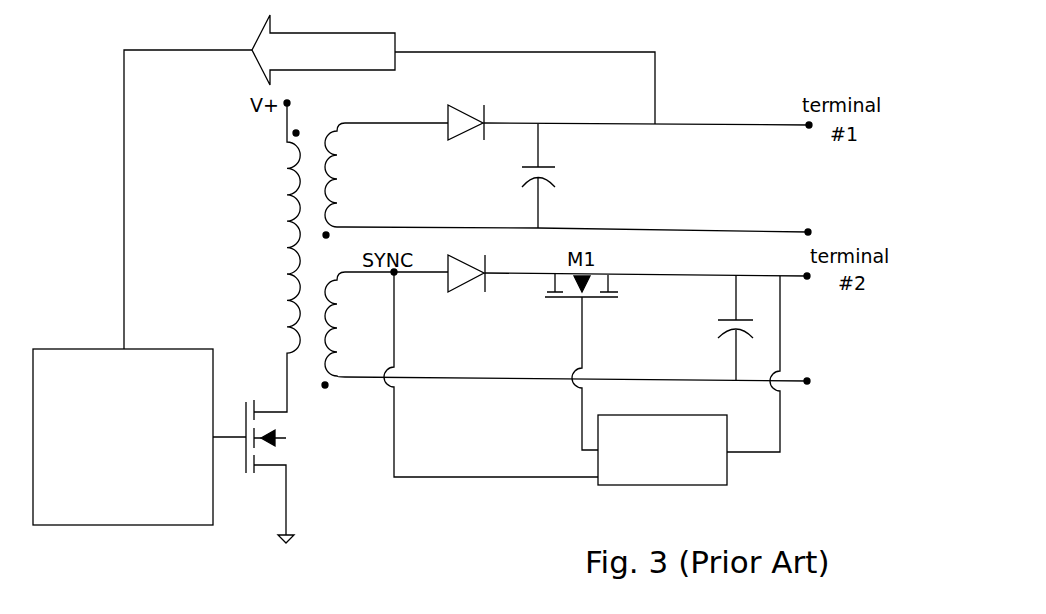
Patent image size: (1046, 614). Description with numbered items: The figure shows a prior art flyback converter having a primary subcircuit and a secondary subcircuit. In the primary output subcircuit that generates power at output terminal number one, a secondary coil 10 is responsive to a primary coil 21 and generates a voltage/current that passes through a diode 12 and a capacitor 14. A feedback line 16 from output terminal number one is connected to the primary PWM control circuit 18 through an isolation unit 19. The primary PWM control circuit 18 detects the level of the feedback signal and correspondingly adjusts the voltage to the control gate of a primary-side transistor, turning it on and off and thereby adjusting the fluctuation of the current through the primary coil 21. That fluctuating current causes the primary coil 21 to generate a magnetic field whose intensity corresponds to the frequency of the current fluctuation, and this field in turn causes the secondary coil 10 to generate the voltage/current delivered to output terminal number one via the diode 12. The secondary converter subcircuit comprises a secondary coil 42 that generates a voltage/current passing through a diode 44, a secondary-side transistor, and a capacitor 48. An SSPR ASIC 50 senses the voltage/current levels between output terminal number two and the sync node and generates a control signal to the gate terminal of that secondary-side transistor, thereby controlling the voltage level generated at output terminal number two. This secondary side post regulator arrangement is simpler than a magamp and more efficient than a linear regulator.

The secondary coil 10 is at (341, 174).
The diode 12 is at (486, 117).
The capacitor 14 is at (558, 177).
The feedback line 16 is at (632, 54).
The primary PWM control circuit 18 is at (140, 528).
The isolation unit 19 is at (257, 70).
The primary coil 21 is at (278, 245).
The secondary coil 42 is at (339, 320).
The diode 44 is at (448, 289).
The capacitor 48 is at (715, 328).
The SSPR ASIC 50 is at (660, 487).